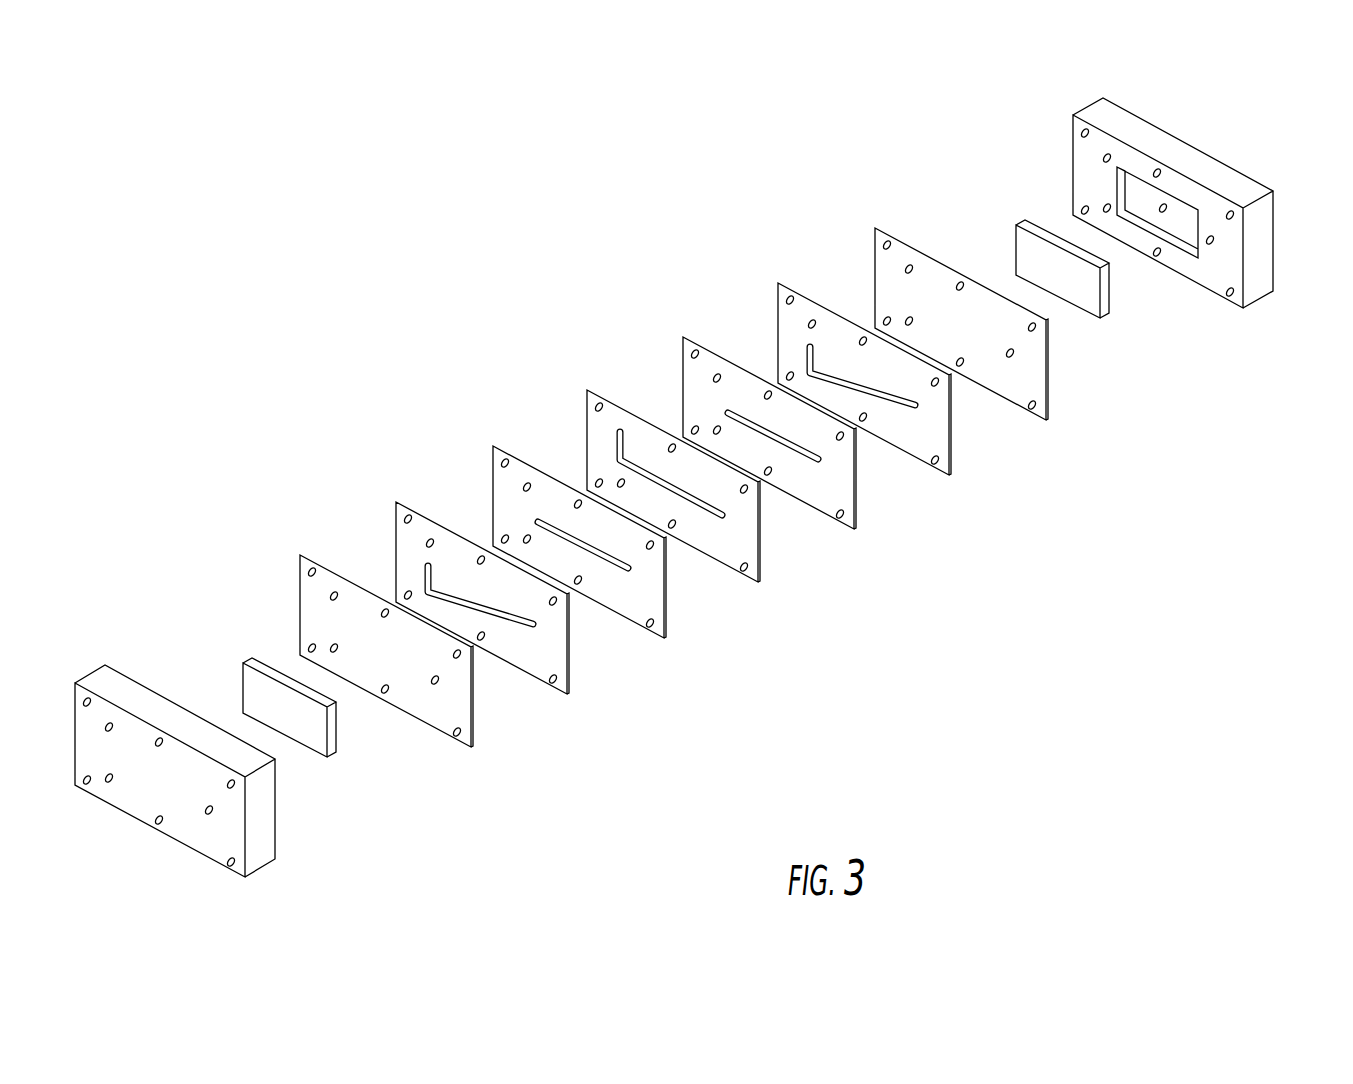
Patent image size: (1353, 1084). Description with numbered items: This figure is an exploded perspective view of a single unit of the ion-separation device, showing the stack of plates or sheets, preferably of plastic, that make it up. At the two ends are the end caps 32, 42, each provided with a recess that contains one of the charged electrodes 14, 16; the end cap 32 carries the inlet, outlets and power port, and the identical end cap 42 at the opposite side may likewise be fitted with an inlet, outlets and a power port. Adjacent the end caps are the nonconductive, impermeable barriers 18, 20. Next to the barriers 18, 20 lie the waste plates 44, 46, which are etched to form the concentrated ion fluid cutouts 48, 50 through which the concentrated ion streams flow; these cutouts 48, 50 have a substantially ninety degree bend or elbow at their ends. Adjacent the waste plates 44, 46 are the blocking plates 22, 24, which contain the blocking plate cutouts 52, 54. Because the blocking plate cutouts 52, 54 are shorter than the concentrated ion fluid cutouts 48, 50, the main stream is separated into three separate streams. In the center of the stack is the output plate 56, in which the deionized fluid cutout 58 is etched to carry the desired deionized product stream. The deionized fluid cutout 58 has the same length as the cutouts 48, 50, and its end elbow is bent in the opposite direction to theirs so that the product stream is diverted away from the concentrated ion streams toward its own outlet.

The charged electrode 14 is at (335, 740).
The charged electrode 16 is at (1100, 315).
The nonconductive impermeable barrier 18 is at (472, 720).
The nonconductive impermeable barrier 20 is at (1047, 408).
The blocking plate 22 is at (539, 496).
The blocking plate 24 is at (764, 418).
The end cap 32 is at (275, 855).
The end cap 42 is at (1245, 176).
The waste plate 44 is at (474, 590).
The waste plate 46 is at (907, 354).
The concentrated ion fluid cutout 48 is at (419, 549).
The concentrated ion fluid cutout 50 is at (856, 302).
The blocking plate cutout 52 is at (520, 489).
The blocking plate cutout 54 is at (824, 475).
The output plate 56 is at (718, 514).
The deionized fluid cutout 58 is at (680, 535).